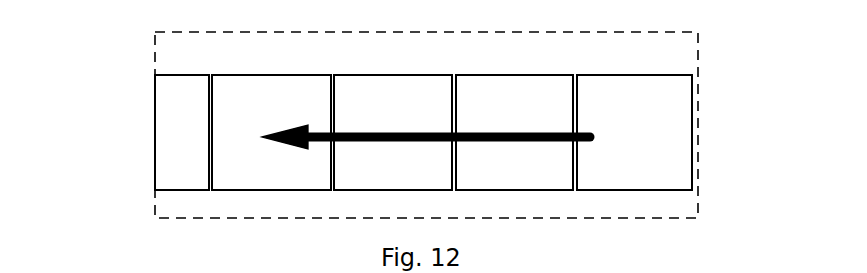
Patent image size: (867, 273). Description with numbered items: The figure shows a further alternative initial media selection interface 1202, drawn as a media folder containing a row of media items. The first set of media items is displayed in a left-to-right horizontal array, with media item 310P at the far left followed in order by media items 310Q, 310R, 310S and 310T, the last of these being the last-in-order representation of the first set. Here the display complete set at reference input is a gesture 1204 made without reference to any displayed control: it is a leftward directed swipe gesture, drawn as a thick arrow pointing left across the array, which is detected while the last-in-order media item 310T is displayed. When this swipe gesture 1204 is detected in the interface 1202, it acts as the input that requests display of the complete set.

The alternative initial media selection interface 1202 is at (120, 73).
The gesture 1204 is at (592, 136).
The media item 310P is at (154, 160).
The media item 310Q is at (271, 132).
The media item 310R is at (393, 132).
The media item 310S is at (514, 132).
The media item 310T is at (634, 132).